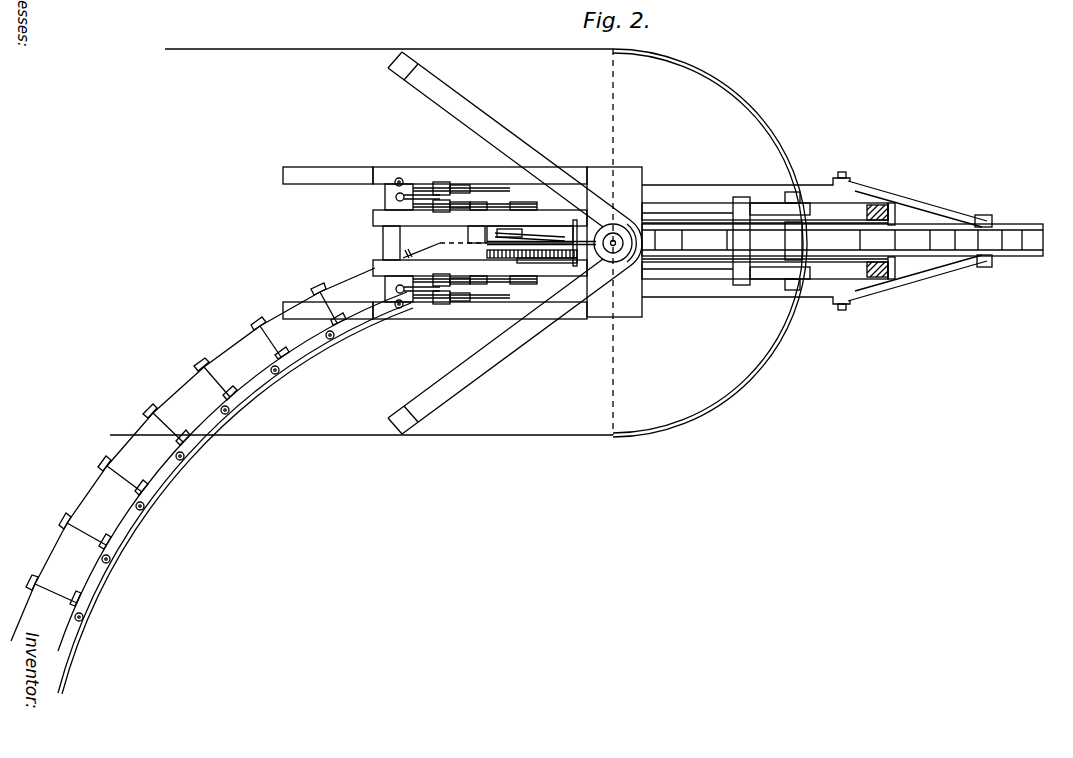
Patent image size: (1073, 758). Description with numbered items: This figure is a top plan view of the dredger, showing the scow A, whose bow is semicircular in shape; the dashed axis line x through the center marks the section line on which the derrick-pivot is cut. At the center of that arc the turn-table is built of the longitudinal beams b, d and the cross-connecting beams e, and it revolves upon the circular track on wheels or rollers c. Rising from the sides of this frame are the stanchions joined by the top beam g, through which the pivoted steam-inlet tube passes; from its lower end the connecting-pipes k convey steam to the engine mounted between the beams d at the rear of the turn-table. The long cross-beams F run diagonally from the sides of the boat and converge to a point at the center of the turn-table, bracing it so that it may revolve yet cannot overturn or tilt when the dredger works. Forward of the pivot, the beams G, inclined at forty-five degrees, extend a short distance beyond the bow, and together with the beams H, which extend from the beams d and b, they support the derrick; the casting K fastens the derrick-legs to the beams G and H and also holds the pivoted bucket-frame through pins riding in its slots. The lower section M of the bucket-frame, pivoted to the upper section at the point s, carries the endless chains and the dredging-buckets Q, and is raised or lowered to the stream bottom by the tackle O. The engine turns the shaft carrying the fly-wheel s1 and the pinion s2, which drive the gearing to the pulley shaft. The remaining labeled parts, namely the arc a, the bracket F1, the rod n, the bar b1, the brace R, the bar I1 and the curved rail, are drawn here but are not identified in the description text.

The circular track a is at (790, 342).
The scow A is at (684, 153).
The section line x x is at (610, 238).
The top beam g is at (614, 242).
The cross-beams F is at (509, 243).
The longitudinal beam b is at (328, 243).
The longitudinal beam d is at (591, 243).
The bracket F1 is at (402, 243).
The connecting-pipes k is at (498, 200).
The cross-connecting beams e is at (592, 241).
The wheels or rollers c is at (476, 234).
The rod n is at (445, 242).
The pivot point s is at (541, 243).
The fly-wheel s1 is at (505, 232).
The pinion s2 is at (522, 259).
The bar b1 is at (548, 263).
The beams G is at (746, 241).
The brace R is at (920, 241).
The beams H is at (765, 241).
The tackle O is at (884, 242).
The casting K is at (895, 222).
The lower section of bucket-frame M is at (921, 262).
The dredging-buckets Q is at (842, 240).
The bar I1 is at (716, 256).
The curved rail is at (212, 481).